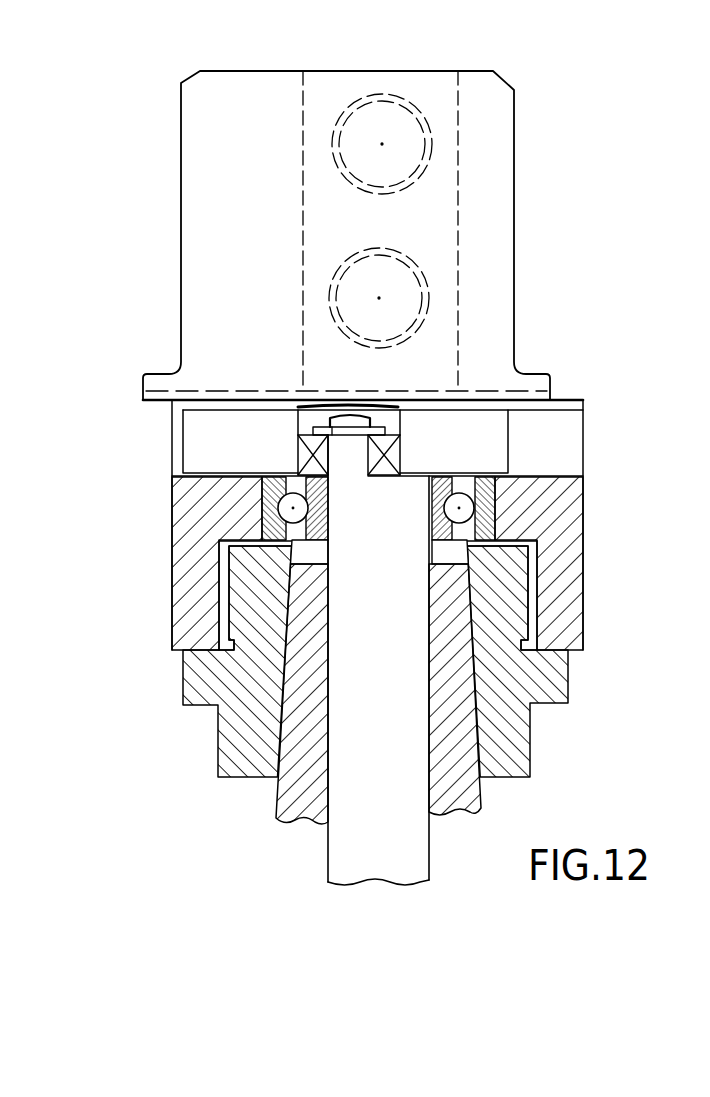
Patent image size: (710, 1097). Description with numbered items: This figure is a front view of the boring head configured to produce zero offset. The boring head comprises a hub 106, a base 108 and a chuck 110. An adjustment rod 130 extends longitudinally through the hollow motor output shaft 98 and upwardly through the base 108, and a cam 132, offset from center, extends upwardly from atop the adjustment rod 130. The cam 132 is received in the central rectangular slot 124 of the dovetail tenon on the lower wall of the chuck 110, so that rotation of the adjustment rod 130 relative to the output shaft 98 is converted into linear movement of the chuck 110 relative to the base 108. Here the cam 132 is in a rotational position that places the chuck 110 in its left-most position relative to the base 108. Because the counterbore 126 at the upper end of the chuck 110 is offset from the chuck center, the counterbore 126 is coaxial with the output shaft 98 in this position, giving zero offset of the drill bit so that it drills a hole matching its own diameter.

The hollow motor output shaft 98 is at (483, 802).
The hub 106 is at (533, 733).
The base 108 is at (570, 560).
The chuck 110 is at (364, 215).
The central rectangular slot 124 is at (298, 415).
The counterbore 126 is at (322, 93).
The adjustment rod 130 is at (347, 849).
The cam 132 is at (353, 458).